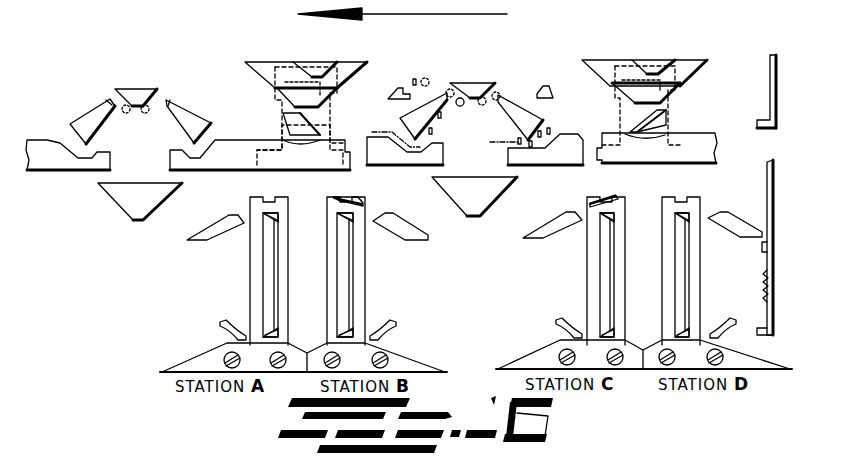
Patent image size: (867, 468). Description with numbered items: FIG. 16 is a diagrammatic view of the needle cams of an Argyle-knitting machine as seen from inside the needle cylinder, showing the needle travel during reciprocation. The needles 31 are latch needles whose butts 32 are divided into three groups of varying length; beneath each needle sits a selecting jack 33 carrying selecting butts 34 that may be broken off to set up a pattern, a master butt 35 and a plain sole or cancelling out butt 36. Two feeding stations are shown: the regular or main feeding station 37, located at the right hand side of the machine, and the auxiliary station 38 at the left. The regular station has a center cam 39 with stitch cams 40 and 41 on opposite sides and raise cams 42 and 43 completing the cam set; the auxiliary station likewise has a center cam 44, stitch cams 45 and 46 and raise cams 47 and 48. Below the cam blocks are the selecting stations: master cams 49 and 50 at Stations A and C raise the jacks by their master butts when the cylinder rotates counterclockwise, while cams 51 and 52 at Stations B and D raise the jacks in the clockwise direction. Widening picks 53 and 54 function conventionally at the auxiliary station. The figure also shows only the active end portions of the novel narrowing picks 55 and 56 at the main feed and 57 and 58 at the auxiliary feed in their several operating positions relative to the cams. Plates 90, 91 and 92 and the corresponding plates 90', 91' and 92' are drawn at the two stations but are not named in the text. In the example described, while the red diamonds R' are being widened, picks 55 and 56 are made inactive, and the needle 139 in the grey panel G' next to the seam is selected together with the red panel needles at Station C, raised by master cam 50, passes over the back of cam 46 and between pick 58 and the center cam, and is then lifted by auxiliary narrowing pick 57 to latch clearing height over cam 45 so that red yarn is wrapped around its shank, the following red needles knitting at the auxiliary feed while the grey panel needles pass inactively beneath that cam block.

The needles 31 is at (772, 78).
The butts 32 is at (763, 120).
The selecting jack 33 is at (769, 178).
The selecting butts 34 is at (764, 281).
The master butt 35 is at (760, 327).
The plain sole or cancelling out butt 36 is at (762, 253).
The regular or main feeding station 37 is at (136, 74).
The auxiliary station 38 is at (470, 74).
The center cam 39 is at (142, 92).
The stitch cam 40 is at (88, 118).
The stitch cam 41 is at (199, 118).
The raise cam 42 is at (68, 155).
The raise cam 43 is at (260, 147).
The center cam 44 is at (479, 85).
The stitch cam 45 is at (413, 118).
The stitch cam 46 is at (531, 118).
The raise cam 47 is at (405, 148).
The raise cam 48 is at (545, 149).
The master cam 49 is at (222, 322).
The master cam 50 is at (558, 320).
The cam 51 is at (395, 323).
The cam 52 is at (732, 319).
The widening pick 53 is at (400, 86).
The widening pick 54 is at (546, 84).
The narrowing pick 55 is at (123, 112).
The narrowing pick 56 is at (148, 112).
The narrowing pick 57 is at (461, 106).
The narrowing pick 58 is at (483, 105).
The notch 90 is at (315, 54).
The trapezoidal plate 91 is at (310, 59).
The trapezoidal plate 92 is at (320, 101).
The notch 90' is at (653, 49).
The trapezoidal plate 91' is at (665, 61).
The trapezoidal plate 92' is at (662, 96).
The needle 139 is at (422, 78).
The red diamond panel R' is at (449, 136).
The grey diamond panel G' is at (535, 160).